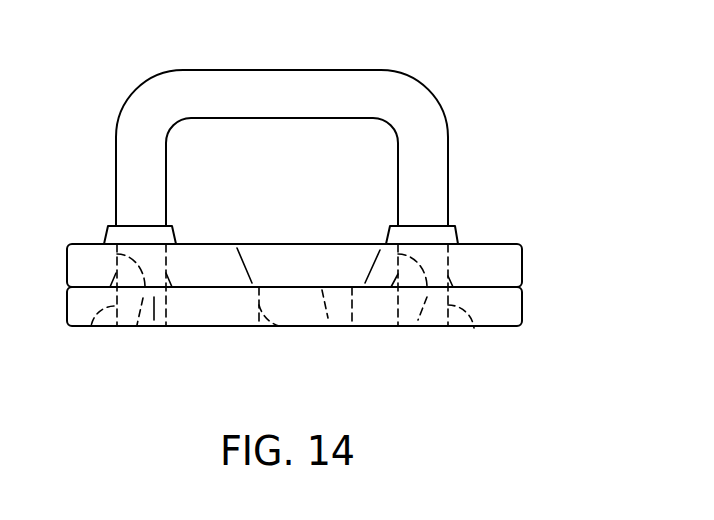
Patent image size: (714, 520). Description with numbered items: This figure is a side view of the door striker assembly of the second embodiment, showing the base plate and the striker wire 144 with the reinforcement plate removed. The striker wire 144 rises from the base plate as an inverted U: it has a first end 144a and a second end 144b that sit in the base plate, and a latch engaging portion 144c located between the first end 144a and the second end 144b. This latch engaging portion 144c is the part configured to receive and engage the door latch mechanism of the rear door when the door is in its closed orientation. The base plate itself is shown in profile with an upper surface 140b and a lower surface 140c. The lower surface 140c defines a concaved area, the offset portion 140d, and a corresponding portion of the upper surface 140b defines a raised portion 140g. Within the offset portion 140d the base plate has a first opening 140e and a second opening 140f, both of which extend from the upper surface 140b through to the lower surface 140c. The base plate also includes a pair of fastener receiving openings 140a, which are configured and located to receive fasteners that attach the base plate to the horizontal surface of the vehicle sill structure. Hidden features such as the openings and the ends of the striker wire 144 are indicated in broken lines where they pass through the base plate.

The striker wire 144 is at (226, 90).
The latch engaging portion 144c is at (335, 92).
The first end 144a is at (91, 327).
The second end 144b is at (474, 328).
The raised portion 140g is at (497, 270).
The lower surface 140c is at (215, 326).
The upper surface 140b is at (212, 287).
The second opening 140f is at (137, 326).
The fastener receiving openings 140a is at (283, 327).
The offset portion 140d is at (329, 326).
The first opening 140e is at (417, 326).